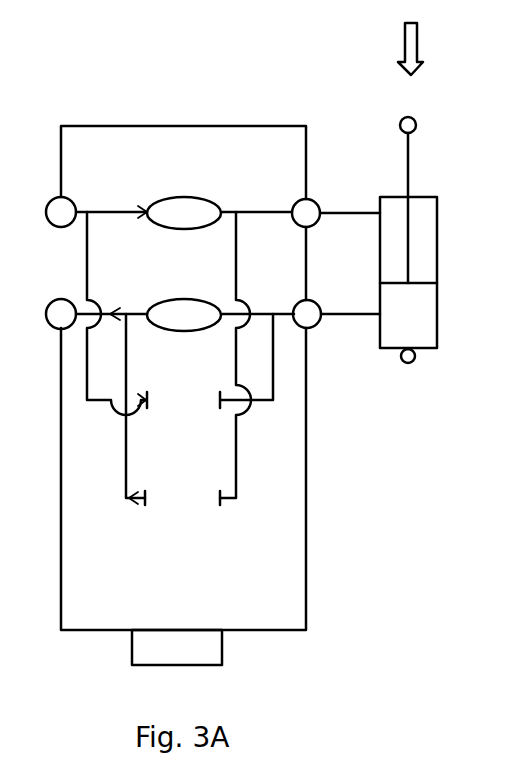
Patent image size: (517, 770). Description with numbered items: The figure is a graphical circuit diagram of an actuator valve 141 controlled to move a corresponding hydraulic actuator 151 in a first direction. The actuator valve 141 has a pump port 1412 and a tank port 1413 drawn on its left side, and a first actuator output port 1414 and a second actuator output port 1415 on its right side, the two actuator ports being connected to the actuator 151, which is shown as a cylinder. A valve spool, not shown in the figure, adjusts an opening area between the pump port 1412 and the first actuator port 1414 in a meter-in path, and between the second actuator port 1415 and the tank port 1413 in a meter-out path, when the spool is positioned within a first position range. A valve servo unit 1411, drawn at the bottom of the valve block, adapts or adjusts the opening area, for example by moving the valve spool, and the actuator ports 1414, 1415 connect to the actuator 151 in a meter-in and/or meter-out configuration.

The actuator valve 141 is at (183, 378).
The valve servo unit 1411 is at (177, 647).
The pump port 1412 is at (48, 196).
The tank port 1413 is at (61, 333).
The first actuator output port 1414 is at (308, 198).
The second actuator output port 1415 is at (313, 330).
The actuator 151 is at (409, 261).